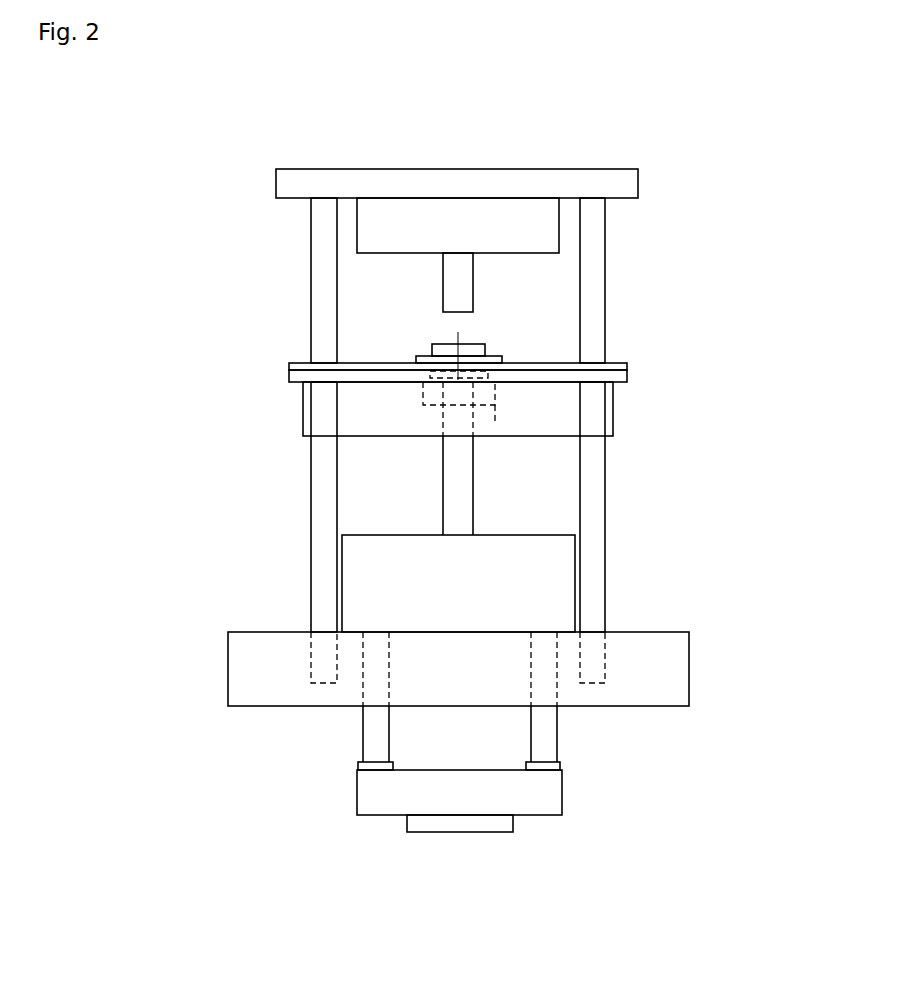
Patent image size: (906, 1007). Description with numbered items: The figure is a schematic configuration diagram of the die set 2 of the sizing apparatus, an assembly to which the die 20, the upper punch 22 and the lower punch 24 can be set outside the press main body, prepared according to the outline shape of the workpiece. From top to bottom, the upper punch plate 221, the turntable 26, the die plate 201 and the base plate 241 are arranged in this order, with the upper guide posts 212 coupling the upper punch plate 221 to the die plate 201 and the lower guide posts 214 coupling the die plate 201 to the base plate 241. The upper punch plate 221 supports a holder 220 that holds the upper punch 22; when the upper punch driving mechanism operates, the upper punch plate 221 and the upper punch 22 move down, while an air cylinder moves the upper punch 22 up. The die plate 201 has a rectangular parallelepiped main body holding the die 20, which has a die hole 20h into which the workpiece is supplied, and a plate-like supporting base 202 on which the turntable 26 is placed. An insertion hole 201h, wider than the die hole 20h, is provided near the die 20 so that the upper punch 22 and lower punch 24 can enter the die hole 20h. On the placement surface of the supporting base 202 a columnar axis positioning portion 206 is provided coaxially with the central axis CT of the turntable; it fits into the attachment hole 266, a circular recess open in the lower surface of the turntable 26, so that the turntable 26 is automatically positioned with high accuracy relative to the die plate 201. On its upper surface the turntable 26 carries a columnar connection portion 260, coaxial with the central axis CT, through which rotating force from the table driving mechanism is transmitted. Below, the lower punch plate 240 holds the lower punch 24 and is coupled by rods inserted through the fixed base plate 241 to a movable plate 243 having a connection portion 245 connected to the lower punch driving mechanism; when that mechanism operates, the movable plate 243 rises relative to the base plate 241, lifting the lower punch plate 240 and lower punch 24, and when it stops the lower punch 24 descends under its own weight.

The die set 2 is at (200, 134).
The upper punch plate 221 is at (630, 183).
The holder 220 is at (538, 217).
The upper punch 22 is at (462, 275).
The upper guide posts 212 is at (595, 290).
The connection portion 260 is at (460, 350).
The central axis of the turntable CT is at (447, 351).
The axis positioning portion 206 is at (432, 352).
The turntable 26 is at (627, 366).
The supporting base 202 is at (623, 381).
The attachment hole 266 is at (433, 377).
The die plate 201 is at (613, 411).
The die 20 is at (483, 394).
The insertion hole 201h is at (495, 420).
The die hole 20h is at (473, 392).
The lower punch 24 is at (458, 510).
The lower guide posts 214 is at (592, 565).
The lower punch plate 240 is at (553, 607).
The base plate 241 is at (678, 675).
The movable plate 243 is at (543, 795).
The connection portion 245 is at (480, 832).